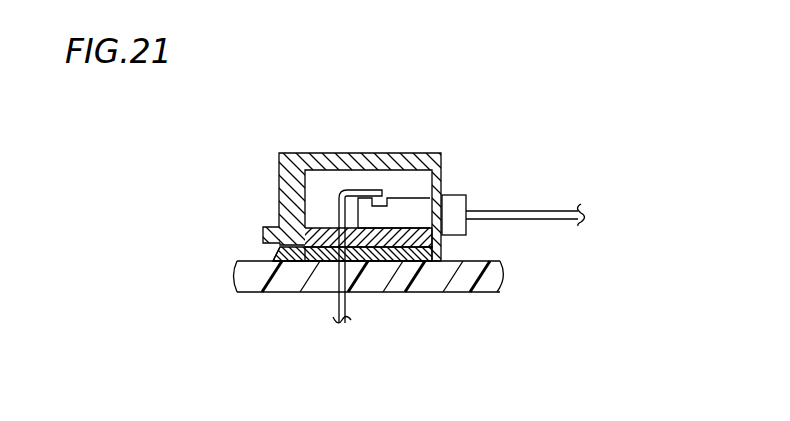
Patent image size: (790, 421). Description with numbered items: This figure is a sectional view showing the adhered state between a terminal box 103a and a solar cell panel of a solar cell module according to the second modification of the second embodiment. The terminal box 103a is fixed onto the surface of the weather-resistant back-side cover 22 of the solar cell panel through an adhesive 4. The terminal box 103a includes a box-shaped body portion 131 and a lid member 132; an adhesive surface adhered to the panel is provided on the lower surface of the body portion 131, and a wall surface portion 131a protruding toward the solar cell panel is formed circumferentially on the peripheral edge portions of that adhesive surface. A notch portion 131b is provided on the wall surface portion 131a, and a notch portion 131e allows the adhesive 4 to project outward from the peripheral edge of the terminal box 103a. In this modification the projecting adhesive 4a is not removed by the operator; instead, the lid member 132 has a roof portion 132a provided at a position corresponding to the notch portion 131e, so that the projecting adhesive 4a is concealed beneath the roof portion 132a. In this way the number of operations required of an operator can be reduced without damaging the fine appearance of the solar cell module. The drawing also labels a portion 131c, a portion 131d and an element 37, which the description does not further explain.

The terminal box 103a is at (397, 240).
The lid member 132 is at (324, 182).
The roof portion 132a is at (277, 228).
The body portion 131 is at (430, 281).
The wall surface portion 131a is at (392, 331).
The notch portion 131b is at (364, 258).
The second layer 131c is at (390, 254).
The side portion of base 131d is at (445, 243).
The notch portion 131e is at (305, 258).
The cable 37 is at (536, 210).
The adhesive 4 is at (392, 264).
The adhesive 4a is at (273, 256).
The back-side cover 22 is at (487, 277).